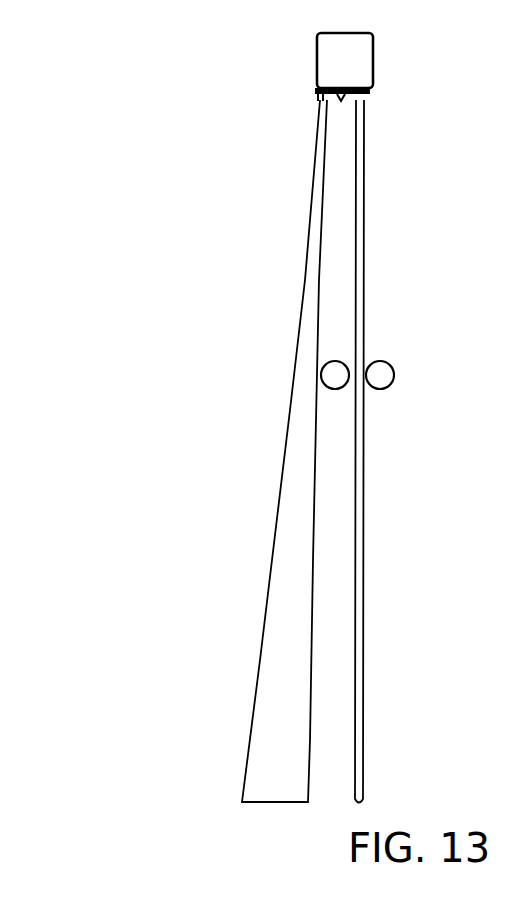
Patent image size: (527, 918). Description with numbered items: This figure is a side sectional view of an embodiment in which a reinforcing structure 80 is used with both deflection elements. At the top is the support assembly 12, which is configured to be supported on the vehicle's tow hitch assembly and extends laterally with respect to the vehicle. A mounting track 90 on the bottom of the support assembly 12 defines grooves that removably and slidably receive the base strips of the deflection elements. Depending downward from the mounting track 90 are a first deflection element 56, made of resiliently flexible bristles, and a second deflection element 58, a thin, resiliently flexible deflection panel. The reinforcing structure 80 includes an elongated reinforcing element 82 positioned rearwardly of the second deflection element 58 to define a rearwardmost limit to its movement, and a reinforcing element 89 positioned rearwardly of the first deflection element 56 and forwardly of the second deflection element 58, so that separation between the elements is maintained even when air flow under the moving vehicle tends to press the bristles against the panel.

The support assembly 12 is at (378, 63).
The mounting track 90 is at (317, 91).
The first deflection element 56 is at (287, 583).
The second deflection element 58 is at (360, 593).
The reinforcing structure 80 is at (380, 337).
The reinforcing element 89 is at (337, 361).
The reinforcing element 82 is at (393, 370).